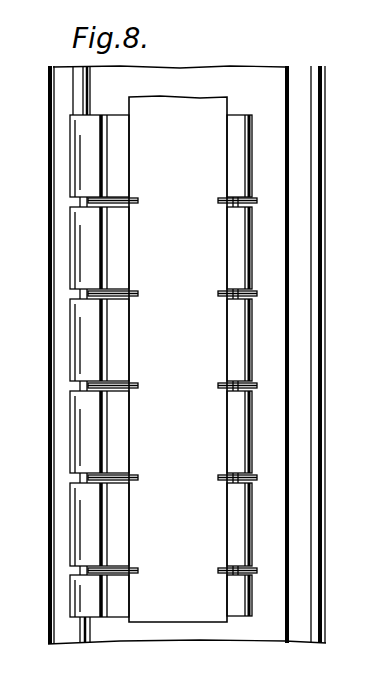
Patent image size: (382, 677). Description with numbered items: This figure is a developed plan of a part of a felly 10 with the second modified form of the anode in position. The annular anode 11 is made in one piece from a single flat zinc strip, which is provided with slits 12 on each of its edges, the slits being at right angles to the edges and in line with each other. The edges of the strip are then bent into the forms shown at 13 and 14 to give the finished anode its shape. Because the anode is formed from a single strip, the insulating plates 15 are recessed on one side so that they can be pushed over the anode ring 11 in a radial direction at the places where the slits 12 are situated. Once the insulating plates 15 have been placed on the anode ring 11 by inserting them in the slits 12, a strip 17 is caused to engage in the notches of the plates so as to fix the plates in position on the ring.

The felly 10 is at (297, 72).
The annular anode 11 is at (237, 127).
The slits 12 is at (117, 390).
The bent edge 13 is at (62, 312).
The bent edge 14 is at (251, 333).
The insulating plates 15 is at (257, 200).
The strip 17 is at (185, 112).